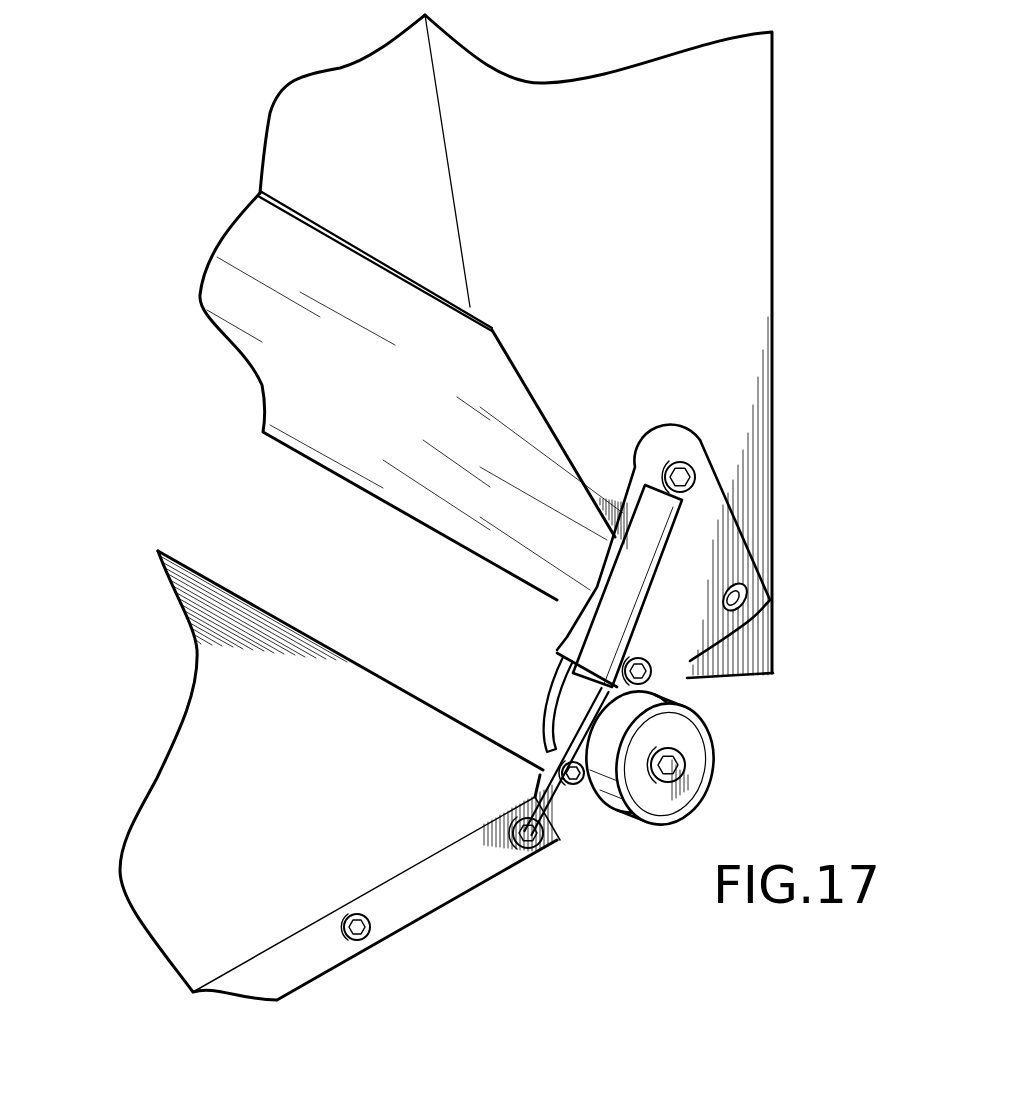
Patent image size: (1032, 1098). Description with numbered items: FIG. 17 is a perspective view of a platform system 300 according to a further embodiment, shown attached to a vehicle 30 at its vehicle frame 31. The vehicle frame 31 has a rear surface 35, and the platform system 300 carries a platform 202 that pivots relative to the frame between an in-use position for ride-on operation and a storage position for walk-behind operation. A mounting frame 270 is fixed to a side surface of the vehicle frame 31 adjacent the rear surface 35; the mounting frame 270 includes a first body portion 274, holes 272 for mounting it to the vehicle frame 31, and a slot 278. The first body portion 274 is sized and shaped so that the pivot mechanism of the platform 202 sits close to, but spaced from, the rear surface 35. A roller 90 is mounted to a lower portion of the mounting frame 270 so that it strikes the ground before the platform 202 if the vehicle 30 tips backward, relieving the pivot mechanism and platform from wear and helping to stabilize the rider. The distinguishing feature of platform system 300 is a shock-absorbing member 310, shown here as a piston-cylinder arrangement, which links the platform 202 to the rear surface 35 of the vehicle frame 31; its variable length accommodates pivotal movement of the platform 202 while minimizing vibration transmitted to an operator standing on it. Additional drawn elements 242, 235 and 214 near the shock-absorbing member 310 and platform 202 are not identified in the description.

The vehicle 30 is at (730, 118).
The vehicle frame 31 is at (657, 292).
The rear surface 35 is at (425, 375).
The platform 202 is at (172, 778).
The platform system 300 is at (393, 590).
The mounting frame 270 is at (705, 527).
The holes 272 is at (681, 460).
The first body portion 274 is at (723, 532).
The bracket flange 242 is at (692, 680).
The shock-absorbing member 310 is at (610, 618).
The slot 278 is at (543, 660).
The rod 235 is at (530, 750).
The nut 214 is at (576, 786).
The roller 90 is at (647, 814).